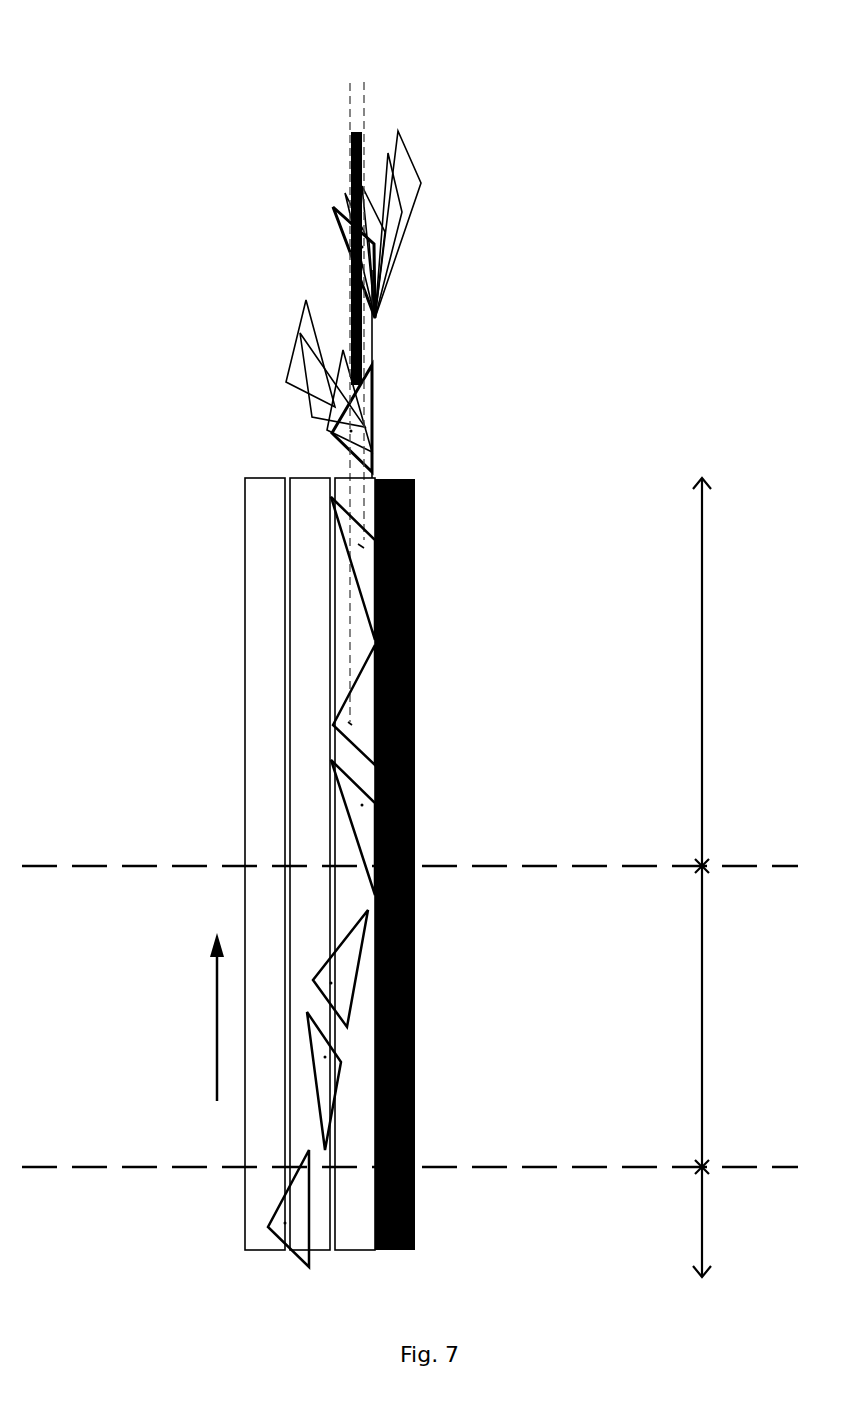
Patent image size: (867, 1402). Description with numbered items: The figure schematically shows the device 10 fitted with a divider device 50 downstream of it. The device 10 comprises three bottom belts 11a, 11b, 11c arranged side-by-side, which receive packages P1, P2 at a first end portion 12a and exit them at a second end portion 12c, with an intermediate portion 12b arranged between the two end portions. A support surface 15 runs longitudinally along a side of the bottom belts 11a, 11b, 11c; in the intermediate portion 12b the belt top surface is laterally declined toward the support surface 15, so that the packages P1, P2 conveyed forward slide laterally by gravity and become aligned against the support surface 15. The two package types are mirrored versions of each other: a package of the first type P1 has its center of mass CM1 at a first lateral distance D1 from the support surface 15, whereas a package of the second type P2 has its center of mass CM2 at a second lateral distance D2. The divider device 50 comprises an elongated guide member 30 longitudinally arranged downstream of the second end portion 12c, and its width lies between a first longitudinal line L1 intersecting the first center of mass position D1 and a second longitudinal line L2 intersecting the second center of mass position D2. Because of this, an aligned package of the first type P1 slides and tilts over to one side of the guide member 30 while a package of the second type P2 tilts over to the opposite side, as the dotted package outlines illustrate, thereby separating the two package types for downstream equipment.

The divider device 50 is at (446, 256).
The device 10 is at (474, 505).
The elongated guide member 30 is at (352, 165).
The first longitudinal line L1 is at (364, 112).
The second longitudinal line L2 is at (350, 121).
The first lateral distance D1 is at (377, 477).
The second lateral distance D2 is at (355, 493).
The package of first type P1 is at (343, 518).
The center of mass of first package type CM1 is at (363, 547).
The package of second type P2 is at (340, 710).
The center of mass of second package type CM2 is at (336, 723).
The bottom belt 11a is at (346, 748).
The bottom belt 11b is at (310, 803).
The bottom belt 11c is at (270, 846).
The support surface 15 is at (416, 704).
The first end portion 12a is at (708, 1222).
The intermediate portion 12b is at (708, 1020).
The second end portion 12c is at (708, 675).